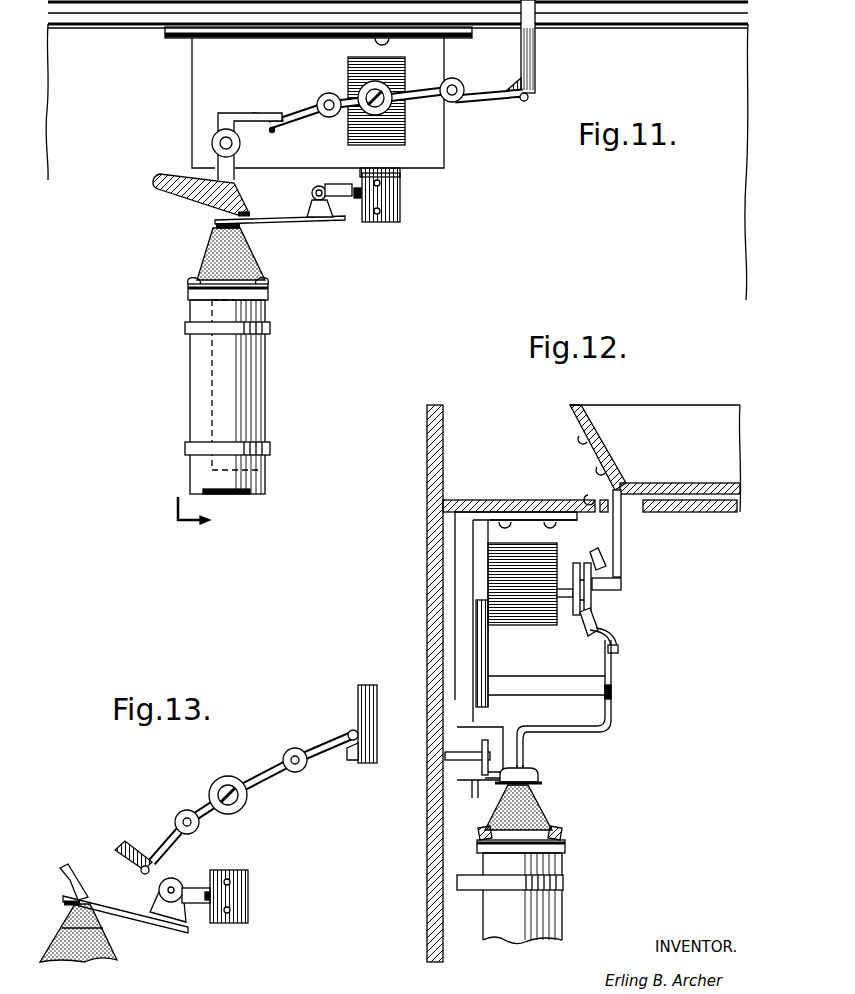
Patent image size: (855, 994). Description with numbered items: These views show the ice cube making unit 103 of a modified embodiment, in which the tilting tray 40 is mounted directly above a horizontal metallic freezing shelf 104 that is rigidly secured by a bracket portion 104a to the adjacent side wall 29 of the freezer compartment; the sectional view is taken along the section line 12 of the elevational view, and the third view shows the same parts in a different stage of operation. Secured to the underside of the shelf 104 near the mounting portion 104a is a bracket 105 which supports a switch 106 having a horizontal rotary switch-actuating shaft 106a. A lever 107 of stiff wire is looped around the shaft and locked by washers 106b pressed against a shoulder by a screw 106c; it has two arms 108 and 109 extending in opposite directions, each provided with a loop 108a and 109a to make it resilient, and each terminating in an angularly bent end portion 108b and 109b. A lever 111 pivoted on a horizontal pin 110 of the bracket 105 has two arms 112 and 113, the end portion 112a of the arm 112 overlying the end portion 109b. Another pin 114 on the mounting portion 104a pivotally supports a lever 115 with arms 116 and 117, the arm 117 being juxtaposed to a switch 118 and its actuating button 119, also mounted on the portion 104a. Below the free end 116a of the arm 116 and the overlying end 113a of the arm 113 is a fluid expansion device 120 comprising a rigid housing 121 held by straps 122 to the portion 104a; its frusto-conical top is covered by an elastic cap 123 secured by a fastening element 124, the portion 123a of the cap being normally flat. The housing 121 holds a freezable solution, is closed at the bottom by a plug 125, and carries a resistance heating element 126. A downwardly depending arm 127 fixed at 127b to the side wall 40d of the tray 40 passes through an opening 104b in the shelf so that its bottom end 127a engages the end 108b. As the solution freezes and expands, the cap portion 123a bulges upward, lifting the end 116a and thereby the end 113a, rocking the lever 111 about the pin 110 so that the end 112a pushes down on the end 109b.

In FIG. 11, the section line 12— 12 is at (204, 514).
In FIG. 12, the side wall 29 is at (443, 421).
In FIG. 12, the tray 40 is at (707, 408).
In FIG. 12, the side wall 40d is at (580, 424).
In FIG. 11, the ice cube making unit 103 is at (613, 32).
In FIG. 12, the ice cube making unit 103 is at (703, 606).
In FIG. 11, the freezing shelf 104 is at (710, 28).
In FIG. 12, the freezing shelf 104 is at (698, 515).
In FIG. 11, the bracket portion 104a is at (725, 252).
In FIG. 12, the bracket portion 104a is at (447, 823).
In FIG. 12, the opening 104b is at (603, 503).
In FIG. 11, the bracket 105 is at (192, 84).
In FIG. 12, the bracket 105 is at (477, 570).
In FIG. 11, the switch 106 is at (350, 65).
In FIG. 12, the switch 106 is at (528, 615).
In FIG. 12, the switch-actuating shaft 106a is at (565, 588).
In FIG. 12, the washers 106b is at (576, 562).
In FIG. 11, the screw 106c is at (375, 98).
In FIG. 12, the screw 106c is at (595, 599).
In FIG. 13, the screw 106c is at (223, 788).
In FIG. 11, the lever 107 is at (418, 106).
In FIG. 13, the lever 107 is at (263, 782).
In FIG. 11, the lever arm 108 is at (482, 100).
In FIG. 13, the lever arm 108 is at (292, 780).
In FIG. 11, the loop 108a is at (455, 85).
In FIG. 13, the loop 108a is at (297, 752).
In FIG. 11, the end portion 108b is at (522, 104).
In FIG. 12, the end portion 108b is at (600, 590).
In FIG. 13, the end portion 108b is at (350, 730).
In FIG. 11, the lever arm 109 is at (310, 120).
In FIG. 13, the lever arm 109 is at (193, 836).
In FIG. 11, the loop 109a is at (329, 93).
In FIG. 12, the loop 109a is at (595, 618).
In FIG. 13, the loop 109a is at (185, 812).
In FIG. 11, the end portion 109b is at (273, 133).
In FIG. 12, the end portion 109b is at (618, 650).
In FIG. 13, the end portion 109b is at (150, 870).
In FIG. 11, the pin 110 is at (218, 143).
In FIG. 12, the pin 110 is at (580, 674).
In FIG. 11, the lever 111 is at (236, 172).
In FIG. 12, the lever 111 is at (612, 722).
In FIG. 11, the lever arm 112 is at (222, 115).
In FIG. 11, the end portion 112a is at (268, 112).
In FIG. 13, the end portion 112a is at (128, 840).
In FIG. 11, the lever arm 113 is at (160, 190).
In FIG. 12, the lever arm 113 is at (510, 722).
In FIG. 11, the end 113a is at (240, 215).
In FIG. 12, the end 113a is at (527, 768).
In FIG. 13, the end 113a is at (62, 882).
In FIG. 11, the pin 114 is at (312, 195).
In FIG. 12, the pin 114 is at (455, 758).
In FIG. 13, the pin 114 is at (171, 890).
In FIG. 11, the lever 115 is at (322, 218).
In FIG. 12, the lever 115 is at (476, 780).
In FIG. 13, the lever 115 is at (165, 917).
In FIG. 11, the lever arm 116 is at (270, 217).
In FIG. 13, the lever arm 116 is at (120, 908).
In FIG. 11, the free end 116a is at (215, 226).
In FIG. 12, the free end 116a is at (540, 775).
In FIG. 13, the free end 116a is at (63, 903).
In FIG. 11, the lever arm 117 is at (347, 200).
In FIG. 13, the lever arm 117 is at (200, 904).
In FIG. 11, the switch 118 is at (398, 201).
In FIG. 12, the switch 118 is at (460, 736).
In FIG. 13, the switch 118 is at (248, 900).
In FIG. 11, the actuating button 119 is at (357, 200).
In FIG. 11, the fluid expansion device 120 is at (276, 378).
In FIG. 12, the fluid expansion device 120 is at (562, 916).
In FIG. 11, the housing 121 is at (200, 381).
In FIG. 12, the housing 121 is at (560, 866).
In FIG. 11, the straps 122 is at (185, 329).
In FIG. 12, the straps 122 is at (470, 884).
In FIG. 11, the cap 123 is at (231, 254).
In FIG. 12, the cap 123 is at (540, 802).
In FIG. 13, the cap portion 123a is at (62, 928).
In FIG. 11, the fastening element 124 is at (190, 285).
In FIG. 12, the fastening element 124 is at (560, 834).
In FIG. 11, the plug 125 is at (248, 494).
In FIG. 11, the heating element 126 is at (235, 420).
In FIG. 11, the arm 127 is at (535, 45).
In FIG. 12, the arm 127 is at (621, 536).
In FIG. 13, the arm 127 is at (360, 697).
In FIG. 11, the bottom end 127a is at (520, 90).
In FIG. 12, the bottom end 127a is at (618, 574).
In FIG. 13, the bottom end 127a is at (350, 762).
In FIG. 12, the securing point 127b is at (593, 456).